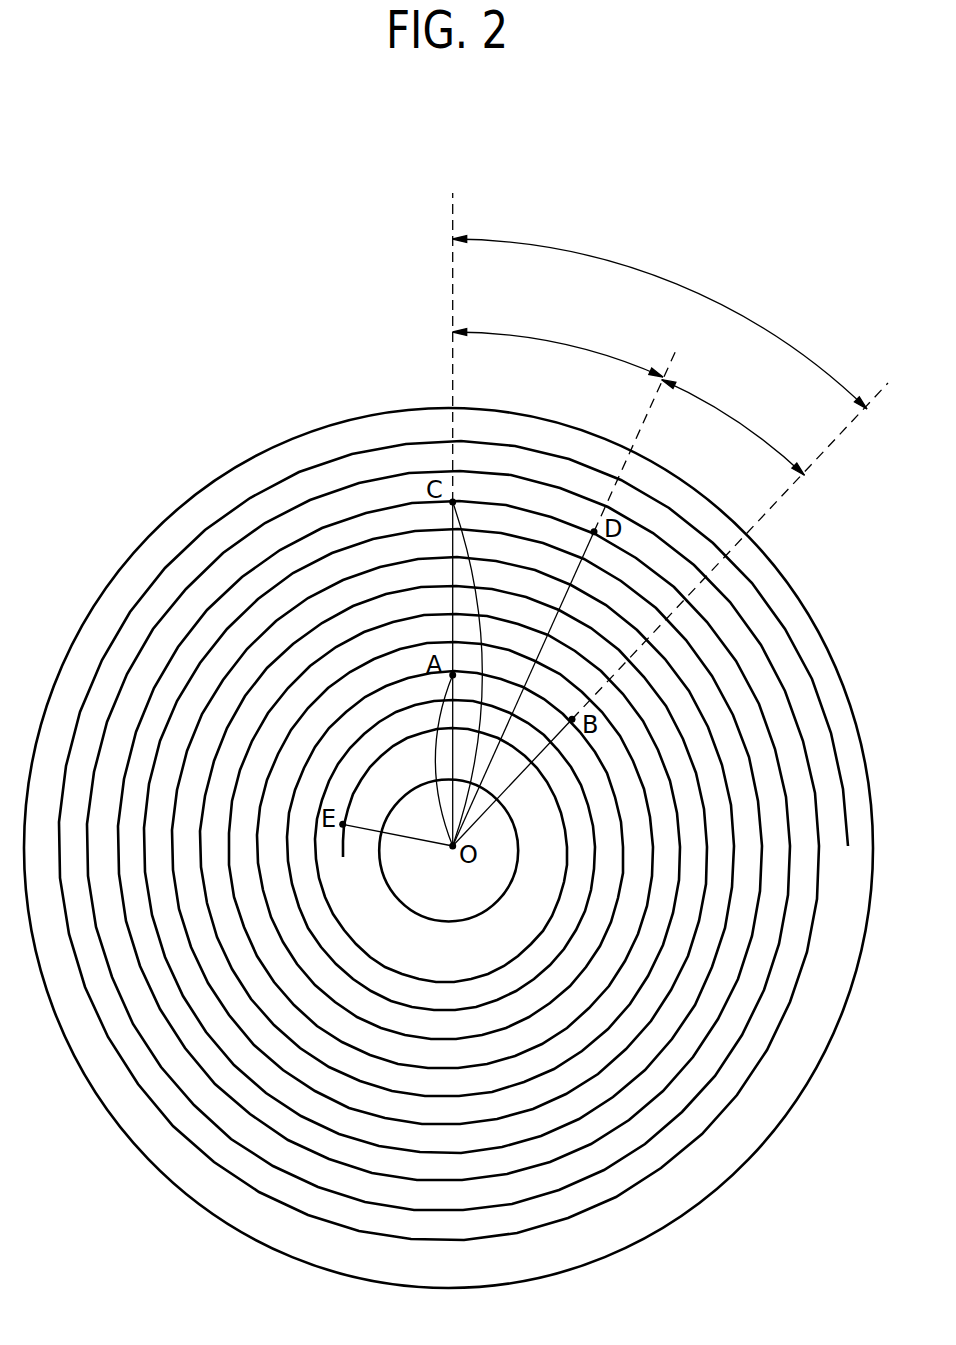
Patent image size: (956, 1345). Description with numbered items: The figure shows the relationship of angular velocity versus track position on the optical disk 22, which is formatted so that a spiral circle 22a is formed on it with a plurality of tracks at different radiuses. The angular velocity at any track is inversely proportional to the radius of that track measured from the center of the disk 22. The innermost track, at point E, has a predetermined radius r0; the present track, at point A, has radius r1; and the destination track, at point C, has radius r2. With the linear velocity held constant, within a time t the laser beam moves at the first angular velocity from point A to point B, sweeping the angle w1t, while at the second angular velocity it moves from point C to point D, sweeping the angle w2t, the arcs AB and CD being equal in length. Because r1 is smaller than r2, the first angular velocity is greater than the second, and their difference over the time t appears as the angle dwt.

The optical disk 22 is at (267, 443).
The spiral circle 22a is at (217, 522).
The radius of the innermost track r0 is at (451, 847).
The radius of the present track r1 is at (437, 760).
The radius of the destination track r2 is at (474, 674).
The angle traversed at the first angular velocity within time t w1t is at (674, 277).
The angle traversed at the second angular velocity within time t w2t is at (525, 320).
The angular difference over time t dwt is at (733, 422).